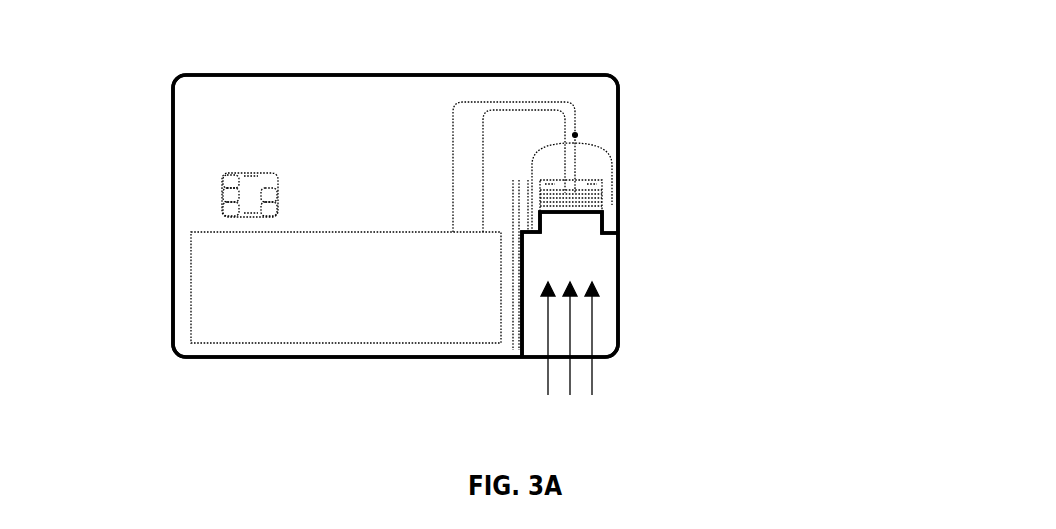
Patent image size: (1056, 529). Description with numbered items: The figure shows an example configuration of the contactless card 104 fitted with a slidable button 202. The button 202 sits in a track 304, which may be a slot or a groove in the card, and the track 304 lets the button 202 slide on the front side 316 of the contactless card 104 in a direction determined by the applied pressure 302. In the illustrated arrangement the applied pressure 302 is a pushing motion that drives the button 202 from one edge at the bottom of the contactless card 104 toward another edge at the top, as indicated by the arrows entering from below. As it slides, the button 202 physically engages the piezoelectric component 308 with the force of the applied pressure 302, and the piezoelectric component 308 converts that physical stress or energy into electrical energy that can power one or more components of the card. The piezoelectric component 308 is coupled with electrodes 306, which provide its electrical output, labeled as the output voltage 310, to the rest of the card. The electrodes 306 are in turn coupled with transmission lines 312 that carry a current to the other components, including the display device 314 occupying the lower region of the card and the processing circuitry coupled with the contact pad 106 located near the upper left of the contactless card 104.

The contactless card 104 is at (146, 122).
The contact pad 106 is at (224, 180).
The button 202 is at (617, 326).
The applied pressure 302 is at (569, 371).
The track 304 is at (517, 215).
The electrodes 306 is at (590, 205).
The piezoelectric component 308 is at (578, 198).
The output voltage 310 is at (575, 135).
The transmission lines 312 is at (453, 125).
The display device 314 is at (205, 295).
The front side 316 is at (312, 74).